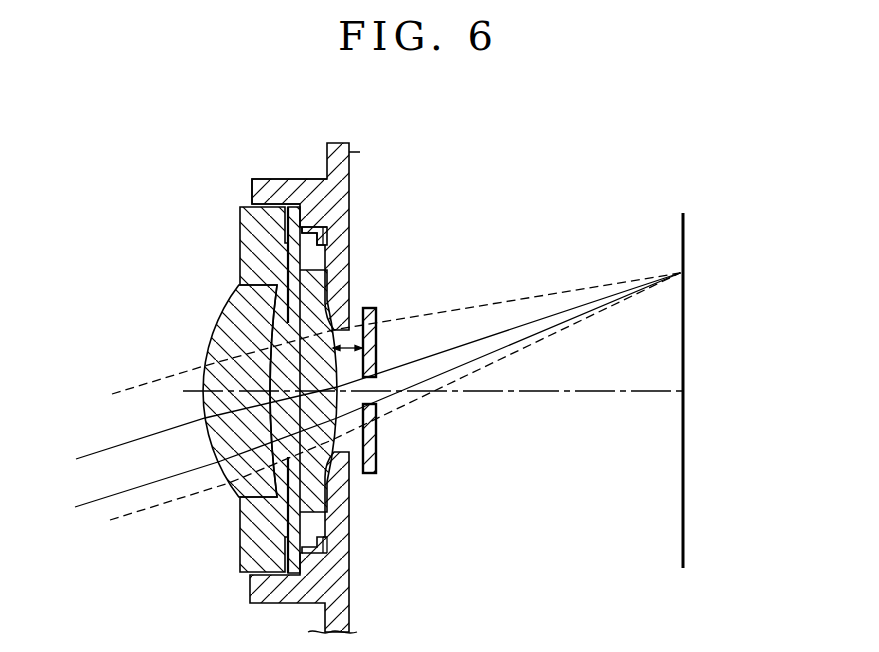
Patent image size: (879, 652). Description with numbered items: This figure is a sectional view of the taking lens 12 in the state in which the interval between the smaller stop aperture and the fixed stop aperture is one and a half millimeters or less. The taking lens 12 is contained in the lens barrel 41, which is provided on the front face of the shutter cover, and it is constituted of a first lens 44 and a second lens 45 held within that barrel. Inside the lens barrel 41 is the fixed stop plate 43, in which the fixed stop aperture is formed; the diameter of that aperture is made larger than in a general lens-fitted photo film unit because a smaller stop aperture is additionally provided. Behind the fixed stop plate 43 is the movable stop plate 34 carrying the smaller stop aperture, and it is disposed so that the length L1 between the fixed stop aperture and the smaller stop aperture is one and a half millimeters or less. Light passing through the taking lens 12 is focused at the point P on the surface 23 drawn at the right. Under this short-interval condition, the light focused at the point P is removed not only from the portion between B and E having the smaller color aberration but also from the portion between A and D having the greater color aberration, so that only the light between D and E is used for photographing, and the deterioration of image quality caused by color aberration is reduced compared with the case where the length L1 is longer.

The taking lens 12 is at (420, 190).
The lens barrel 41 is at (275, 185).
The fixed stop plate 43 is at (346, 495).
The first lens 44 is at (263, 262).
The second lens 45 is at (312, 239).
The movable stop plate 34 is at (376, 448).
The image plane (photosensitive surface) 23 is at (685, 343).
The length between fixed stop aperture and smaller stop aperture L1 is at (352, 343).
The focus point P is at (694, 275).
The light ray A is at (385, 407).
The light ray B is at (383, 345).
The light ray D is at (365, 401).
The light ray E is at (366, 377).